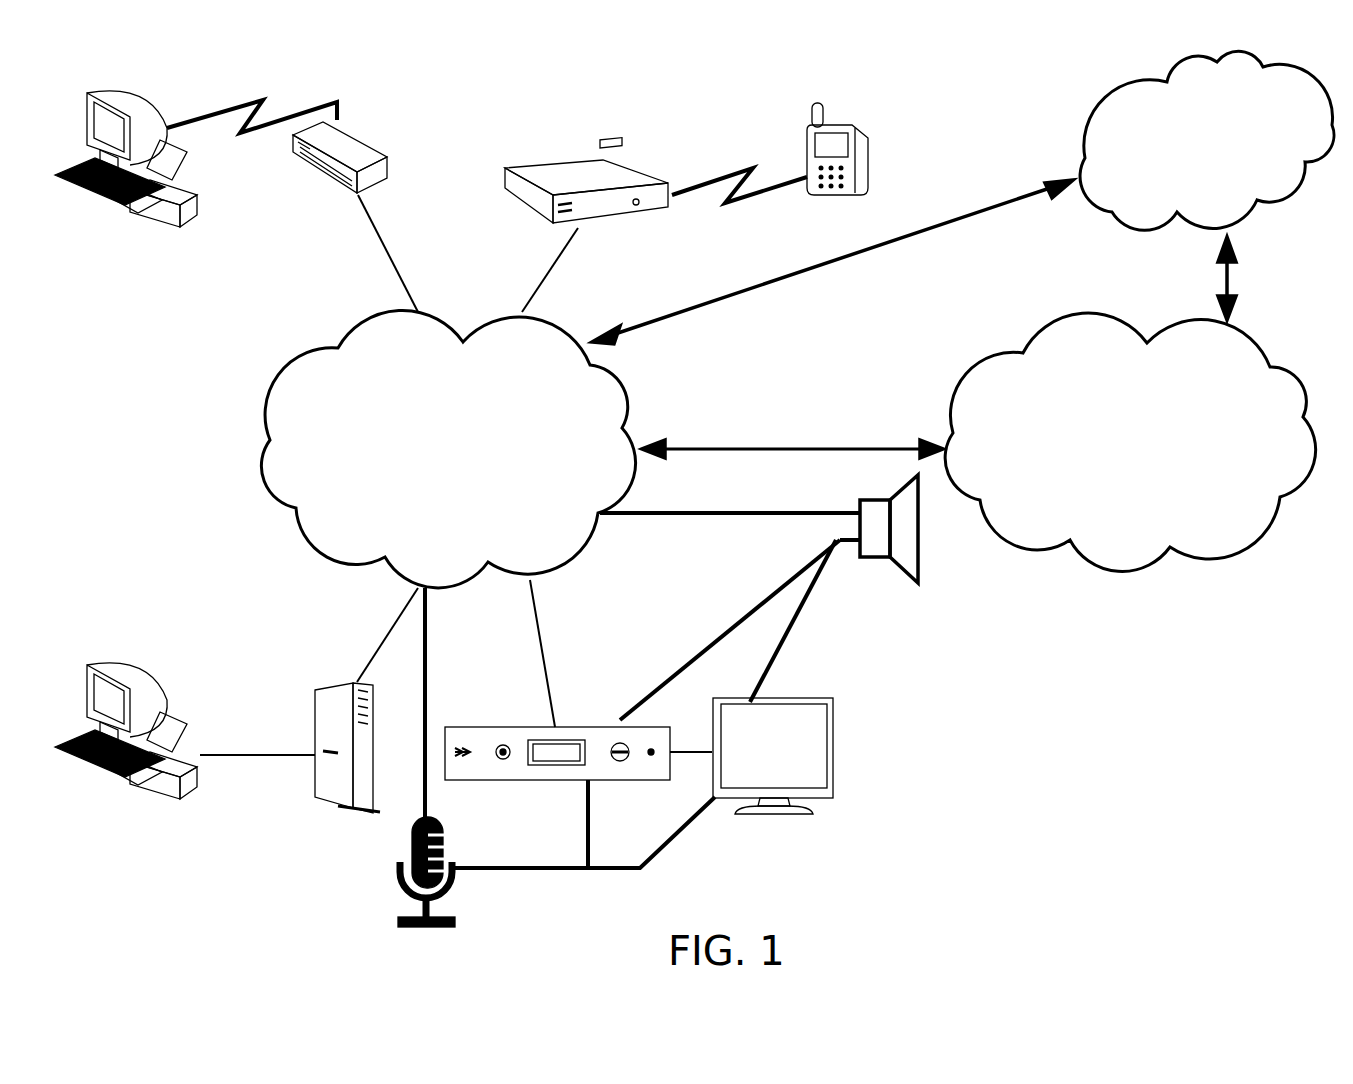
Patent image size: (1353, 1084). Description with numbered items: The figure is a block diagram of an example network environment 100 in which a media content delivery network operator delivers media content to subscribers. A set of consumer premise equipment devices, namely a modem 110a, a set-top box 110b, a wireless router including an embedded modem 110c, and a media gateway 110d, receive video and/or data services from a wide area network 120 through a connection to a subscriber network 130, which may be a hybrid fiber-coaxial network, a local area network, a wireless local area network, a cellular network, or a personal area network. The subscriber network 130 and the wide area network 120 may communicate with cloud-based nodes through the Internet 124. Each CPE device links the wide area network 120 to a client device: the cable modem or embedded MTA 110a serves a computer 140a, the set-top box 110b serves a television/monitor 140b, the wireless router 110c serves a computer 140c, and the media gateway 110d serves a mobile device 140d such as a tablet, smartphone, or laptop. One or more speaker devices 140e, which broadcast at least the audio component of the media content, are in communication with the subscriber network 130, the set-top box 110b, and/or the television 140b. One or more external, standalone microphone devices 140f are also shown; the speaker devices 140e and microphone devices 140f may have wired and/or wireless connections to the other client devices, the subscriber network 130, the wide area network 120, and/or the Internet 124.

The network environment 100 is at (1228, 826).
The modem 110a is at (355, 815).
The set-top box 110b is at (545, 783).
The wireless router including an embedded modem 110c is at (378, 140).
The media gateway 110d is at (600, 152).
The wide area network (WAN) 120 is at (1120, 566).
The Internet 124 is at (1297, 205).
The subscriber network 130 is at (363, 568).
The computer 140a is at (108, 660).
The television/monitor 140b is at (790, 697).
The computer 140c is at (105, 85).
The mobile device 140d is at (878, 128).
The speaker device 140e is at (925, 552).
The microphone device 140f is at (407, 843).